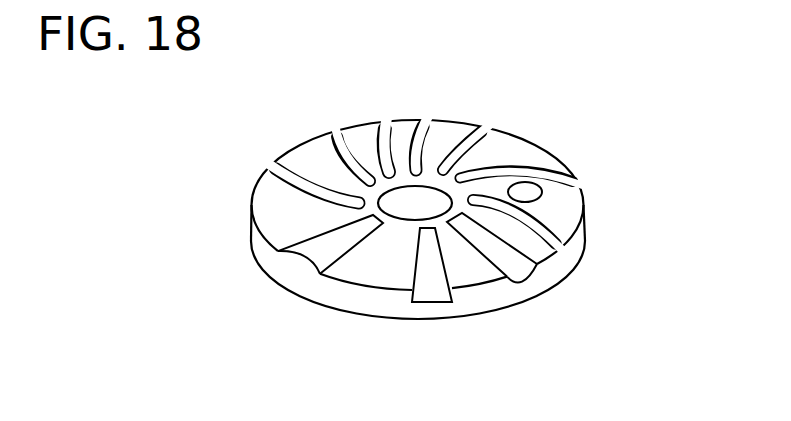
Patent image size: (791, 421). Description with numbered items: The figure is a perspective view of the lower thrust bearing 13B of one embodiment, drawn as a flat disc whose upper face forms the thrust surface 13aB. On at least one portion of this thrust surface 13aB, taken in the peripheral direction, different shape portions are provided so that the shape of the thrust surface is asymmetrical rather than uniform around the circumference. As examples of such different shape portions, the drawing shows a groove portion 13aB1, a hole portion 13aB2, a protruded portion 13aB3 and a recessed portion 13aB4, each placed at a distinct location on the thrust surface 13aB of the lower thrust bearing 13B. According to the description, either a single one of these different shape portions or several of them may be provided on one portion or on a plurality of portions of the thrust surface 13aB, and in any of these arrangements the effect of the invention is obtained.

The lower thrust bearing 13B is at (396, 251).
The thrust surface 13aB is at (268, 199).
The groove portion 13aB1 is at (430, 280).
The hole portion 13aB2 is at (528, 192).
The protruded portion 13aB3 is at (318, 252).
The recessed portion 13aB4 is at (517, 265).